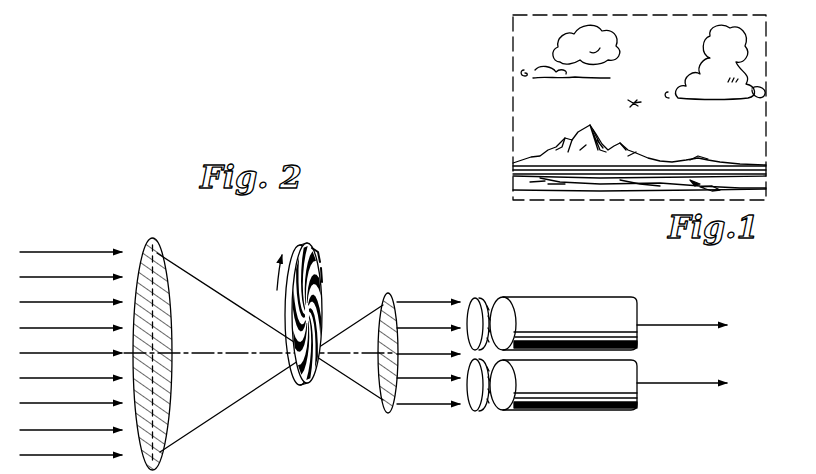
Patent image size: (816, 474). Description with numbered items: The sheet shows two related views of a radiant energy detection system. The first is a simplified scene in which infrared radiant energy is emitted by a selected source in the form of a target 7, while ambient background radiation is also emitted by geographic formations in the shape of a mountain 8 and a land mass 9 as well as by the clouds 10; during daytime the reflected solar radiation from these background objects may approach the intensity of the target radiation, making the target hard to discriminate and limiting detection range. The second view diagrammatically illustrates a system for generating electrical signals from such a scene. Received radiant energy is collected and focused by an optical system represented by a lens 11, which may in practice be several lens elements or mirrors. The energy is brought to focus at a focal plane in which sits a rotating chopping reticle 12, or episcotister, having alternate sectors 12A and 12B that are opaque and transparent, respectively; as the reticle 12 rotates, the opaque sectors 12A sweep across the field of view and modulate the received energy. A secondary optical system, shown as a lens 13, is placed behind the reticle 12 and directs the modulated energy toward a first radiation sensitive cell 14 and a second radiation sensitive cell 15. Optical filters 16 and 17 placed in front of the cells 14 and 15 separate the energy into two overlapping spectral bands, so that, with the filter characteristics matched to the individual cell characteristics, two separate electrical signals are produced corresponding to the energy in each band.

In FIG. 1, the target 7 is at (638, 103).
In FIG. 1, the mountain 8 is at (592, 127).
In FIG. 1, the land mass 9 is at (710, 160).
In FIG. 1, the clouds 10 is at (566, 66).
In FIG. 2, the lens 11 is at (157, 245).
In FIG. 2, the rotating chopping reticle 12 is at (302, 246).
In FIG. 2, the opaque sectors 12A is at (313, 247).
In FIG. 2, the transparent sectors 12B is at (323, 268).
In FIG. 2, the lens 13 is at (389, 295).
In FIG. 2, the first radiation sensitive cell 14 is at (584, 297).
In FIG. 2, the second radiation sensitive cell 15 is at (590, 410).
In FIG. 2, the optical filter 16 is at (478, 298).
In FIG. 2, the optical filter 17 is at (478, 411).